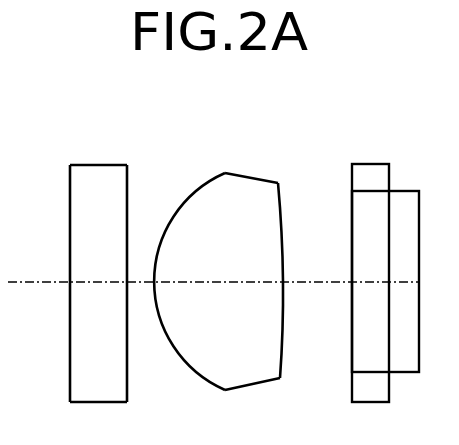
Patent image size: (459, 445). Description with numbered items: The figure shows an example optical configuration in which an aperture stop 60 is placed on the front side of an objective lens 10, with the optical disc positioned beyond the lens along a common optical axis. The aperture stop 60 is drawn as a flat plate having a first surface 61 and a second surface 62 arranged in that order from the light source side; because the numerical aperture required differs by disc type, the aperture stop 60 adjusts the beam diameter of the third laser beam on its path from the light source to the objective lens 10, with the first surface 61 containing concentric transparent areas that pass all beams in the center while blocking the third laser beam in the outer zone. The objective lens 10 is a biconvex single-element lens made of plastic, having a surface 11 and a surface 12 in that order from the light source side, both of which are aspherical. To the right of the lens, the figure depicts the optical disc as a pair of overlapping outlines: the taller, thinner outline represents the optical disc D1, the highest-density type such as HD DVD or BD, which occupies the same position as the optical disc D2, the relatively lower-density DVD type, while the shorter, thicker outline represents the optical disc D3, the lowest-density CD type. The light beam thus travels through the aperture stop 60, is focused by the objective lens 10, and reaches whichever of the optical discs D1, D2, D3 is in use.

The objective lens 10 is at (242, 257).
The surface of objective lens 11 is at (200, 192).
The surface of objective lens 12 is at (284, 220).
The aperture stop 60 is at (100, 233).
The first surface 61 is at (70, 167).
The second surface 62 is at (144, 258).
The optical disc D1 is at (395, 249).
The optical disc D2 is at (370, 172).
The optical disc D3 is at (403, 203).